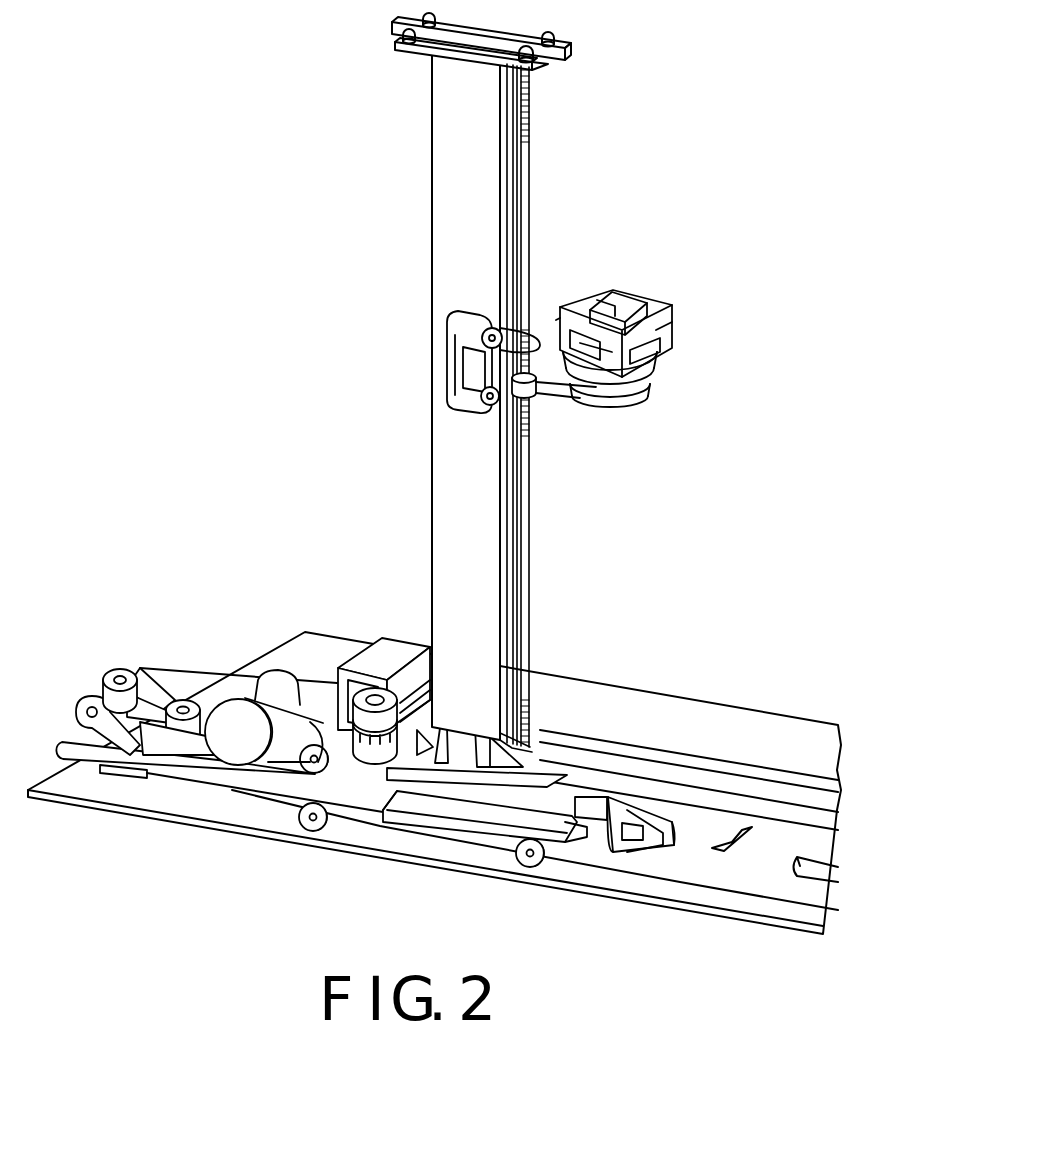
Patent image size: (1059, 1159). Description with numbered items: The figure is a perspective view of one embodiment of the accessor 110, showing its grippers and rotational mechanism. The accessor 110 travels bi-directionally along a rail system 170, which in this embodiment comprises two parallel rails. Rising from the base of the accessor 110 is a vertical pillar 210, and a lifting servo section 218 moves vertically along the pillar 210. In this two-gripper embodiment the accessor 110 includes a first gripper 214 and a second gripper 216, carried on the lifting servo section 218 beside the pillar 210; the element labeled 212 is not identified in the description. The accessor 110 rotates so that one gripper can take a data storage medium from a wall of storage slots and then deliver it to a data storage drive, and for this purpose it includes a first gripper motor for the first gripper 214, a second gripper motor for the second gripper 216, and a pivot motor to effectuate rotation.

The accessor 110 is at (402, 264).
The vertical pillar 210 is at (450, 177).
The connector housing 212 is at (678, 332).
The first gripper 214 is at (651, 296).
The second gripper 216 is at (655, 372).
The lifting servo section 218 is at (556, 385).
The rail system 170 is at (745, 805).